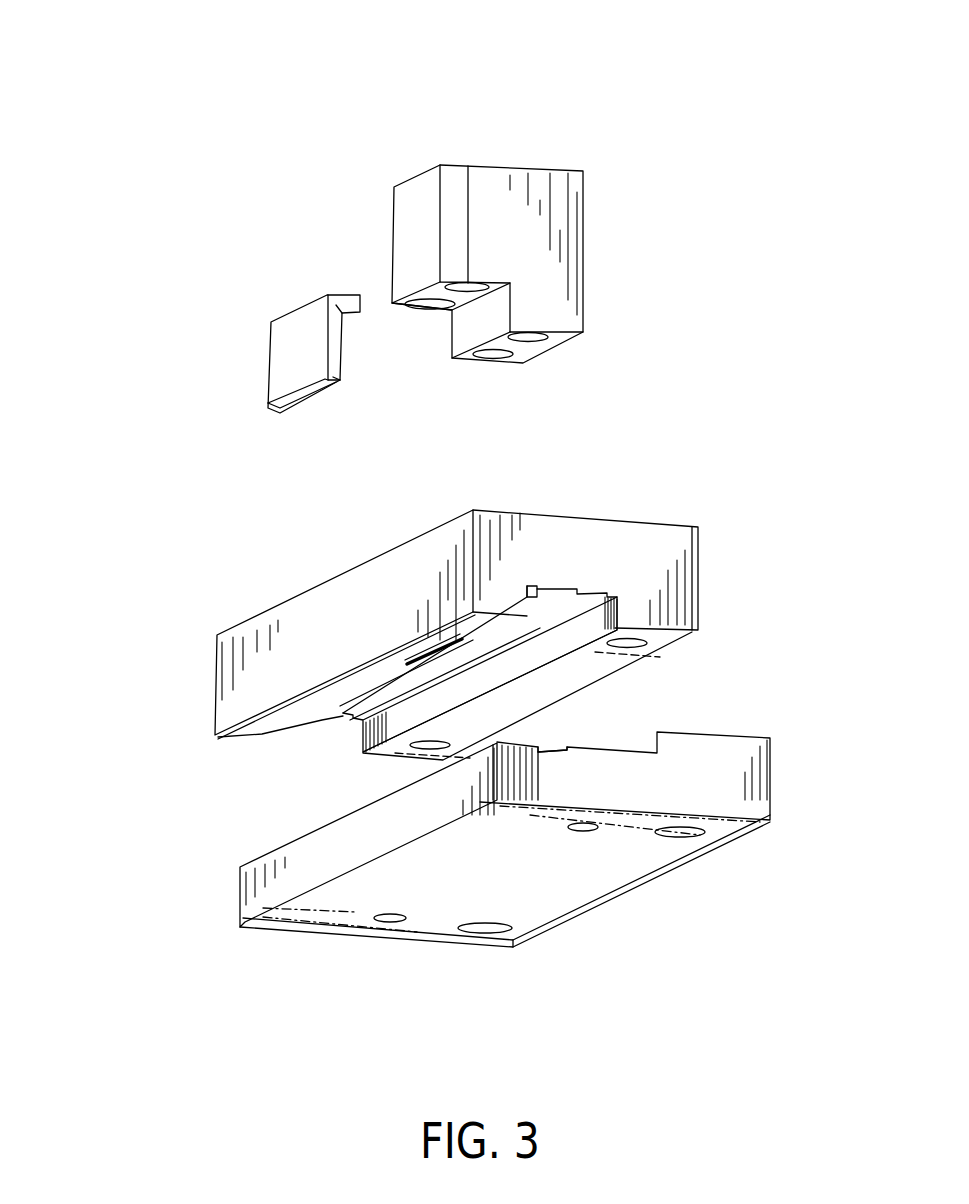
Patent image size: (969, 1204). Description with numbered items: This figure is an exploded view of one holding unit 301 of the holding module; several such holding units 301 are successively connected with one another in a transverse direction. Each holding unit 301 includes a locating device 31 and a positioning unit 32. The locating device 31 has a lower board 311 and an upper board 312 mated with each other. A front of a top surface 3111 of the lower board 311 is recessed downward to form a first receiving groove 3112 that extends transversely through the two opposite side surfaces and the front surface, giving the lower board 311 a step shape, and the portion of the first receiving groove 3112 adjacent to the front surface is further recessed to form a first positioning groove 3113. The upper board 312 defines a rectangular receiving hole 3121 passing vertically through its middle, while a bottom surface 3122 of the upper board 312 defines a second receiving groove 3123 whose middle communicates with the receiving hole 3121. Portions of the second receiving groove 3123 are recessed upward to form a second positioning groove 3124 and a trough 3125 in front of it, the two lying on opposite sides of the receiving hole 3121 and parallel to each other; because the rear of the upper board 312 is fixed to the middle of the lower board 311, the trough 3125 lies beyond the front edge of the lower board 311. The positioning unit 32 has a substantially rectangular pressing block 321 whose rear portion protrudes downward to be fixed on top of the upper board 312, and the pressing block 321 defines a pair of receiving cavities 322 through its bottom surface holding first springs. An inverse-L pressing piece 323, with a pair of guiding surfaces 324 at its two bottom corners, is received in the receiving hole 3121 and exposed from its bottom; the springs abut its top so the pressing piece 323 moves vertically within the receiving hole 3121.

The holding unit 301 is at (118, 48).
The locating device 31 is at (72, 718).
The lower board 311 is at (262, 888).
The top surface 3111 is at (373, 803).
The first receiving groove 3112 is at (600, 743).
The first positioning groove 3113 is at (552, 750).
The upper board 312 is at (233, 690).
The receiving hole 3121 is at (432, 651).
The bottom surface 3122 is at (657, 650).
The second receiving groove 3123 is at (343, 728).
The second positioning groove 3124 is at (603, 585).
The trough 3125 is at (532, 585).
The positioning unit 32 is at (393, 420).
The pressing block 321 is at (540, 200).
The receiving cavities 322 is at (470, 287).
The pressing piece 323 is at (307, 358).
The guiding surfaces 324 is at (310, 380).